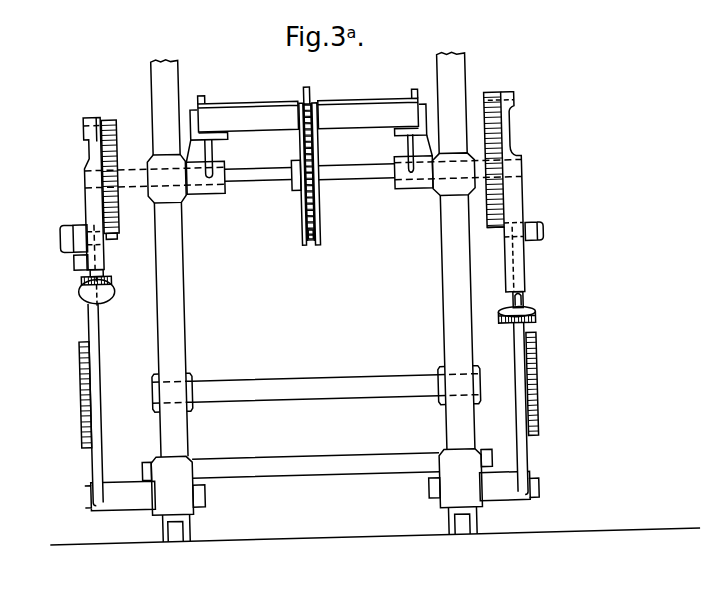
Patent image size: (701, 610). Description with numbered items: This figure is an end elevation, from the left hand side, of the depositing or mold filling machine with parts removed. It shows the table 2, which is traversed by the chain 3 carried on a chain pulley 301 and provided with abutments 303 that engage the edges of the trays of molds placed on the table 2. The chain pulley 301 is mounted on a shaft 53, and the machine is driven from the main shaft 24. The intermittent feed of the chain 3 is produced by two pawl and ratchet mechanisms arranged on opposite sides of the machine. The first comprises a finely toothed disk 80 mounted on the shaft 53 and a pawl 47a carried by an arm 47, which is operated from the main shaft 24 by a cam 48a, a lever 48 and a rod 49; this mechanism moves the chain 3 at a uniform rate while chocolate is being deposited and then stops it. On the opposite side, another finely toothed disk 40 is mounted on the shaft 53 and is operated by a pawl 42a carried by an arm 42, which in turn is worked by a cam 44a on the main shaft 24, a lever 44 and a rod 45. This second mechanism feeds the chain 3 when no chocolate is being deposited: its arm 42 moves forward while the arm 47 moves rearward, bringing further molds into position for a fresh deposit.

The table 2 is at (351, 125).
The chain 3 is at (310, 239).
The main shaft 24 is at (329, 377).
The finely toothed disk 40 is at (516, 211).
The arm 42 is at (490, 226).
The pawl 42a is at (497, 108).
The lever 44 is at (516, 466).
The cam 44a is at (536, 350).
The rod 45 is at (544, 250).
The arm 47 is at (93, 188).
The pawl 47a is at (117, 114).
The lever 48 is at (88, 308).
The cam 48a is at (79, 423).
The rod 49 is at (75, 250).
The shaft 53 is at (260, 178).
The finely toothed disk 80 is at (120, 231).
The chain pulley 301 is at (320, 232).
The abutment 303 is at (317, 97).